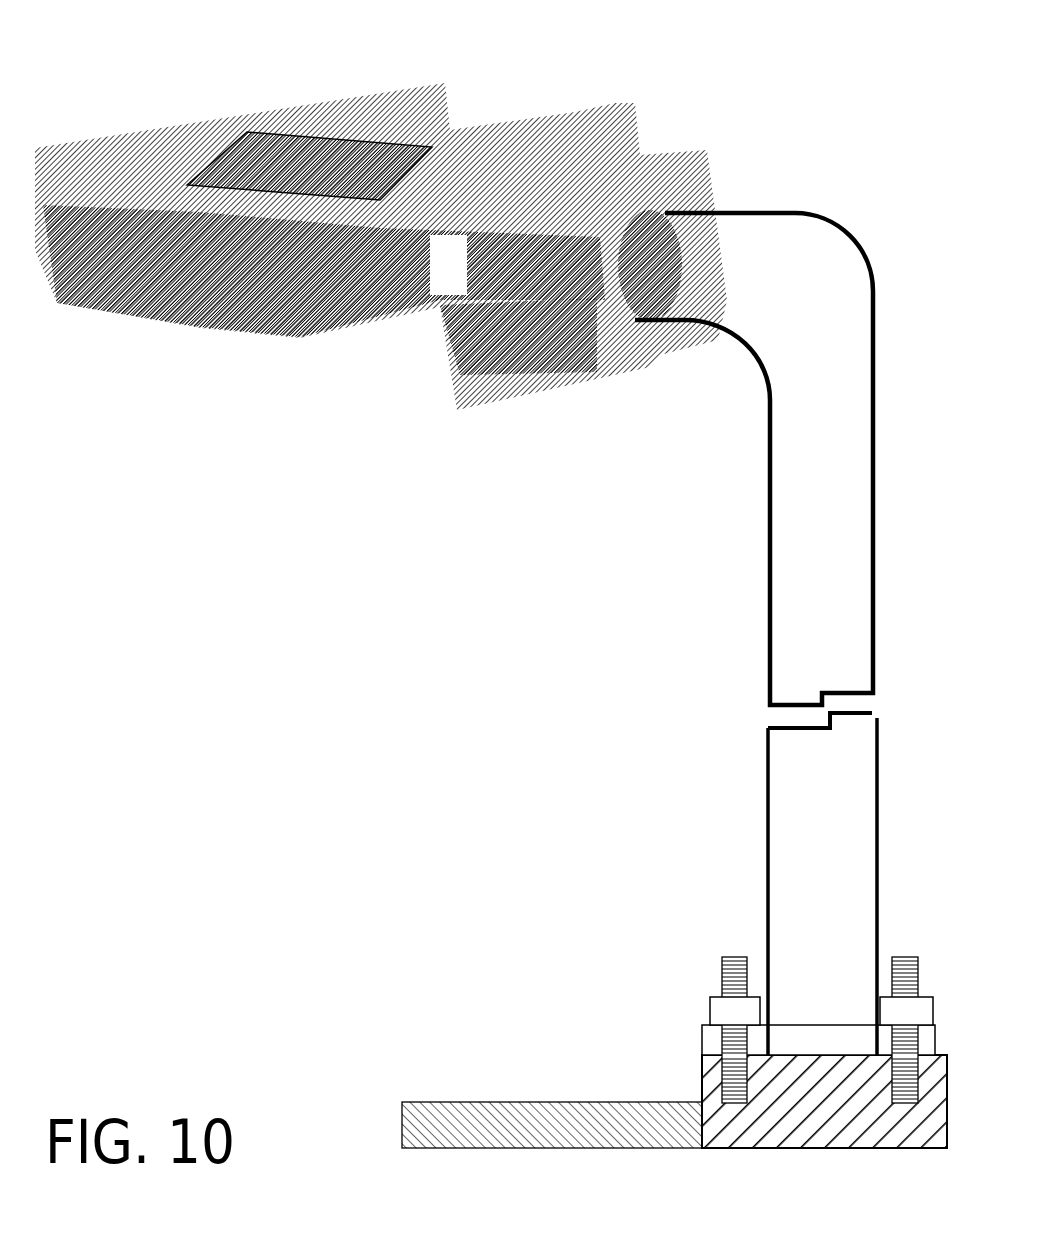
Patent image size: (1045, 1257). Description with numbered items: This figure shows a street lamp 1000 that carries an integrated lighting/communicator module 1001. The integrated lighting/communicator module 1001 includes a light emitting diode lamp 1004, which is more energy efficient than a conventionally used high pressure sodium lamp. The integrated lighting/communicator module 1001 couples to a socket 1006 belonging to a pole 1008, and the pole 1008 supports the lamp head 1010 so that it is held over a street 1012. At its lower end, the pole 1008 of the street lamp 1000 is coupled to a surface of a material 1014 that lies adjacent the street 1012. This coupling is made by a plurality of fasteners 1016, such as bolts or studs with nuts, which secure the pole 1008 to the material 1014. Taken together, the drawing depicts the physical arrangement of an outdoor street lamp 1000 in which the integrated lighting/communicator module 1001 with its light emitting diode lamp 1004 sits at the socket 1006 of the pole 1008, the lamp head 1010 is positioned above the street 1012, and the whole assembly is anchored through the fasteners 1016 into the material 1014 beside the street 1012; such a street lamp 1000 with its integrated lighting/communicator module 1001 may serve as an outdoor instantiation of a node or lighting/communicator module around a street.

The street lamp 1000 is at (752, 77).
The integrated lighting/communicator module 1001 is at (198, 138).
The light emitting diode (LED) lamp 1004 is at (190, 300).
The socket 1006 is at (447, 300).
The pole 1008 is at (765, 630).
The lamp head 1010 is at (598, 372).
The street 1012 is at (450, 1100).
The material 1014 is at (705, 1085).
The fasteners 1016 is at (712, 1008).